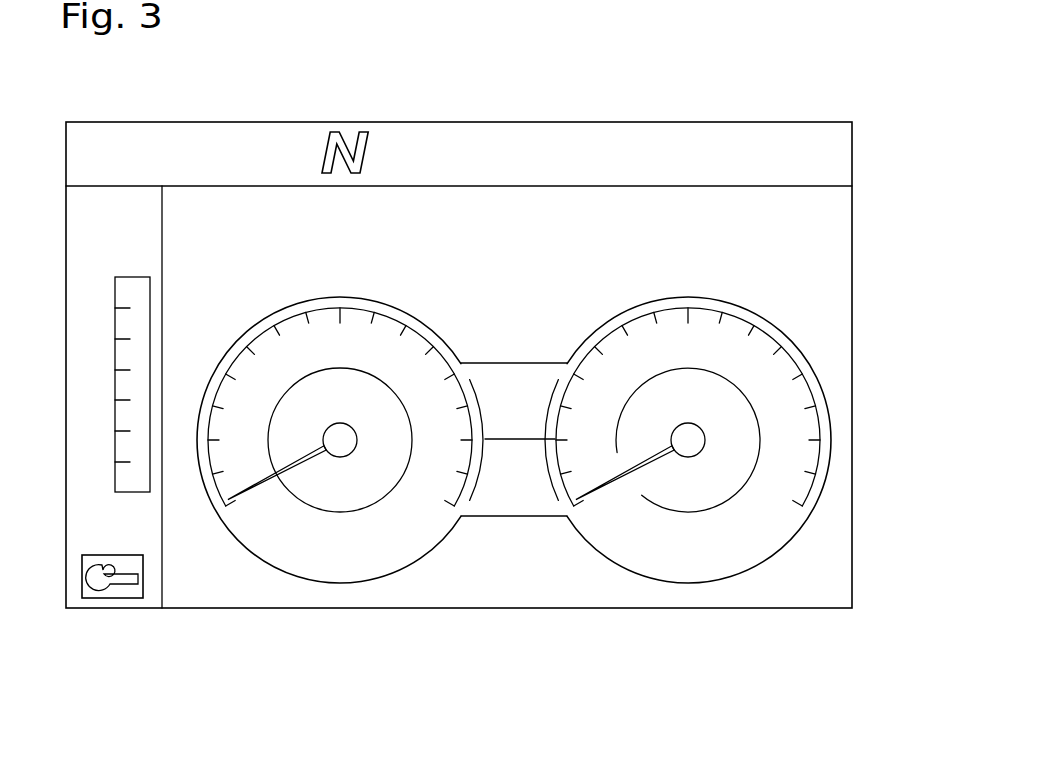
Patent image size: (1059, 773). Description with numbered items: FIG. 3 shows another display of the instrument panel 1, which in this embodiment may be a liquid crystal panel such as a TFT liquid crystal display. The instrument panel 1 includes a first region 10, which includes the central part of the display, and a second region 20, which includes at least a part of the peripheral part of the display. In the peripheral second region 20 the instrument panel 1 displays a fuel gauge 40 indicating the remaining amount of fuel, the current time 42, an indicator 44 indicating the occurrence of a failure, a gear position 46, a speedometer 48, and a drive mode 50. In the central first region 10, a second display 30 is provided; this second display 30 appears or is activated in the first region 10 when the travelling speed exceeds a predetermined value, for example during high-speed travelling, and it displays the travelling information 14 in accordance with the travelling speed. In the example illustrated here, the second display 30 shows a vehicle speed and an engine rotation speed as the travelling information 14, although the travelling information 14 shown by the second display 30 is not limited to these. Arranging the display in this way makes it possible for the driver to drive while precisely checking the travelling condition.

The instrument panel 1 is at (831, 109).
The first region 10 is at (825, 252).
The travelling information 14 is at (348, 555).
The second region 20 is at (93, 521).
The second display 30 is at (797, 348).
The fuel gauge 40 is at (115, 384).
The current time 42 is at (119, 133).
The indicator 44 is at (85, 577).
The gear position 46 is at (346, 125).
The speedometer 48 is at (466, 125).
The drive mode 50 is at (690, 125).